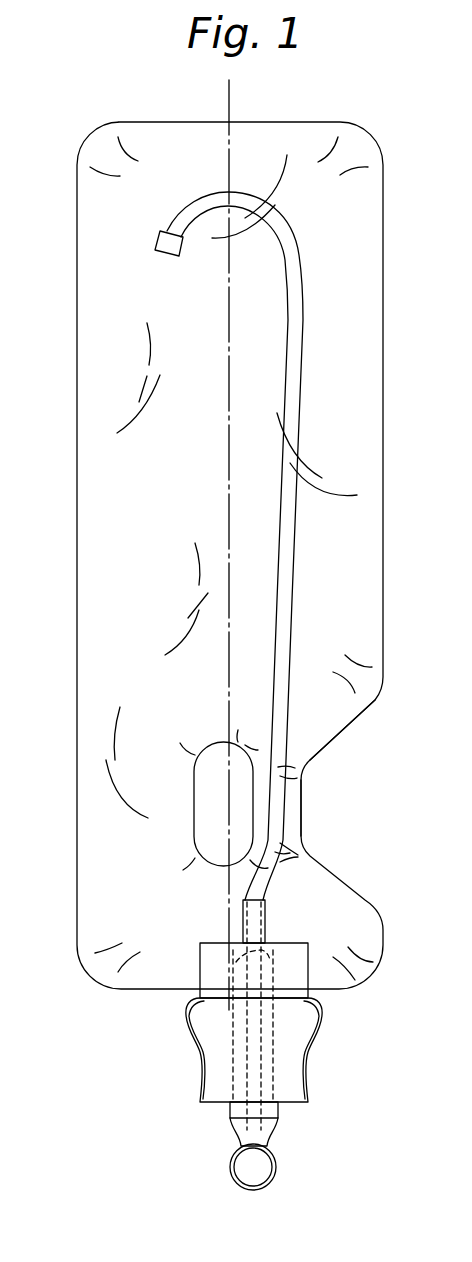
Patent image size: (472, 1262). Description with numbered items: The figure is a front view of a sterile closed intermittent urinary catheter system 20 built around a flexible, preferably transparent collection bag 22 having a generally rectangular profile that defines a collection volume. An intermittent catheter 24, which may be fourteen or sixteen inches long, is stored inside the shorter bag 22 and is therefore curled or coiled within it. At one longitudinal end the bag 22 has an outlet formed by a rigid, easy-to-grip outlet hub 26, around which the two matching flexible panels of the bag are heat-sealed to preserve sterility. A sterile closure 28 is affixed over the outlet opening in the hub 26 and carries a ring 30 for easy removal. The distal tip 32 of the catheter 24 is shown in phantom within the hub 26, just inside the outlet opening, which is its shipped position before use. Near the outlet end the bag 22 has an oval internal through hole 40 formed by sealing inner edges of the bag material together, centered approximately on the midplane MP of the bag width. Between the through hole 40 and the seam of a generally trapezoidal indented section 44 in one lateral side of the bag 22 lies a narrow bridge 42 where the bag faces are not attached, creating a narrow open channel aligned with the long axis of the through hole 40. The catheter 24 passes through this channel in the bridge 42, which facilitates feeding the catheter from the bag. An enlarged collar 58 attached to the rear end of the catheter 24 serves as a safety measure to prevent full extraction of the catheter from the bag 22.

The sterile closed intermittent urinary catheter system 20 is at (99, 114).
The collection bag 22 is at (77, 380).
The intermittent catheter 24 is at (303, 312).
The outlet hub 26 is at (308, 1066).
The sterile closure 28 is at (270, 1128).
The ring 30 is at (278, 1163).
The distal tip 32 is at (247, 1046).
The internal through hole 40 is at (200, 815).
The narrow bridge 42 is at (303, 812).
The indented section 44 is at (340, 732).
The enlarged collar 58 is at (155, 238).
The midplane MP is at (232, 100).